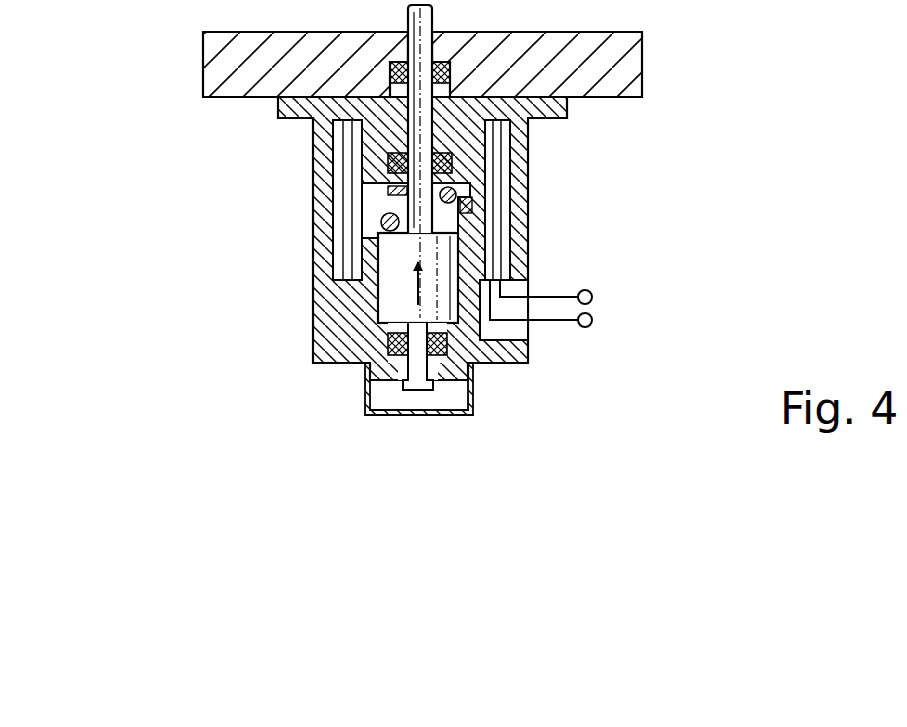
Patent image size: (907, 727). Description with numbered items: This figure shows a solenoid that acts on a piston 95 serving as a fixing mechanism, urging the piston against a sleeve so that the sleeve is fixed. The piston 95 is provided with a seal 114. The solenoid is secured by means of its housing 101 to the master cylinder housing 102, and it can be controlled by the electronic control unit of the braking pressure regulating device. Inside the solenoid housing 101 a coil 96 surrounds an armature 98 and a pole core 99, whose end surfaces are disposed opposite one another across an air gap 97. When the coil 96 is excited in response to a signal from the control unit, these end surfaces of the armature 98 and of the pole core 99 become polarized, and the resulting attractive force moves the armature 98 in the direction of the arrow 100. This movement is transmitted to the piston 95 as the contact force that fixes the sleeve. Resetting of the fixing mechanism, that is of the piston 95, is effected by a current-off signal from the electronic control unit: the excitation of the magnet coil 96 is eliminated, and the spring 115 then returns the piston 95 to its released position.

The master cylinder housing 102 is at (215, 86).
The seal 114 is at (403, 67).
The solenoid housing 101 is at (317, 117).
The piston 95 is at (415, 124).
The armature 98 is at (392, 245).
The arrow 100 is at (410, 275).
The pole core 99 is at (453, 160).
The coil 96 is at (485, 190).
The air gap 97 is at (466, 208).
The spring 115 is at (528, 235).